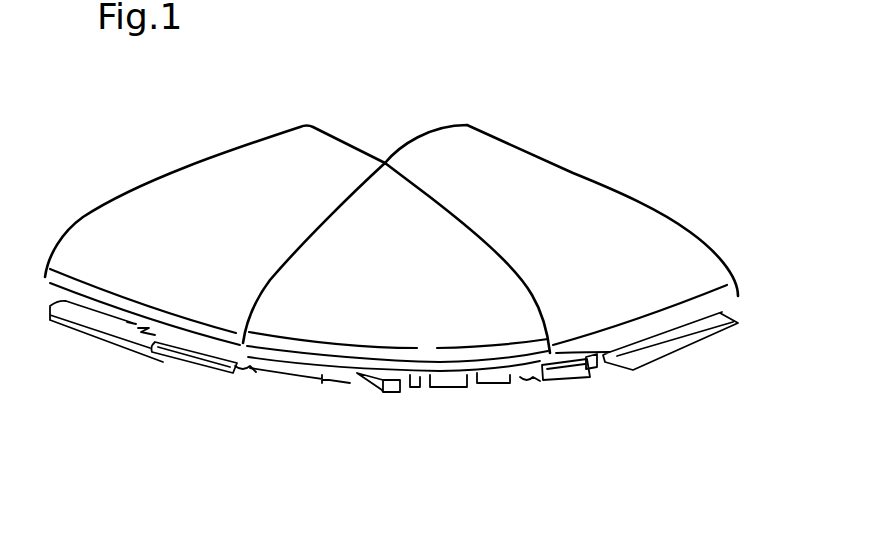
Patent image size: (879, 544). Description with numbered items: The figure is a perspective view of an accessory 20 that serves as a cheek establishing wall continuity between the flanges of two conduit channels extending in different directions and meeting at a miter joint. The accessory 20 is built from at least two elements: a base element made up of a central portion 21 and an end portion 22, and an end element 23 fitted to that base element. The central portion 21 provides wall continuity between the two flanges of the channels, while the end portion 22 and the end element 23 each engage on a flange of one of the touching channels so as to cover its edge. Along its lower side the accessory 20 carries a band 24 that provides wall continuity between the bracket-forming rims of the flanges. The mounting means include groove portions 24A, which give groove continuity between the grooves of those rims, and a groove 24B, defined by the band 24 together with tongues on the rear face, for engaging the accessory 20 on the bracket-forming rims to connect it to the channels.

The accessory 20 is at (391, 200).
The central portion 21 is at (378, 188).
The end portion 22 is at (268, 155).
The end element 23 is at (436, 135).
The band 24 is at (470, 354).
The groove portions 24A is at (203, 357).
The groove 24B is at (95, 323).